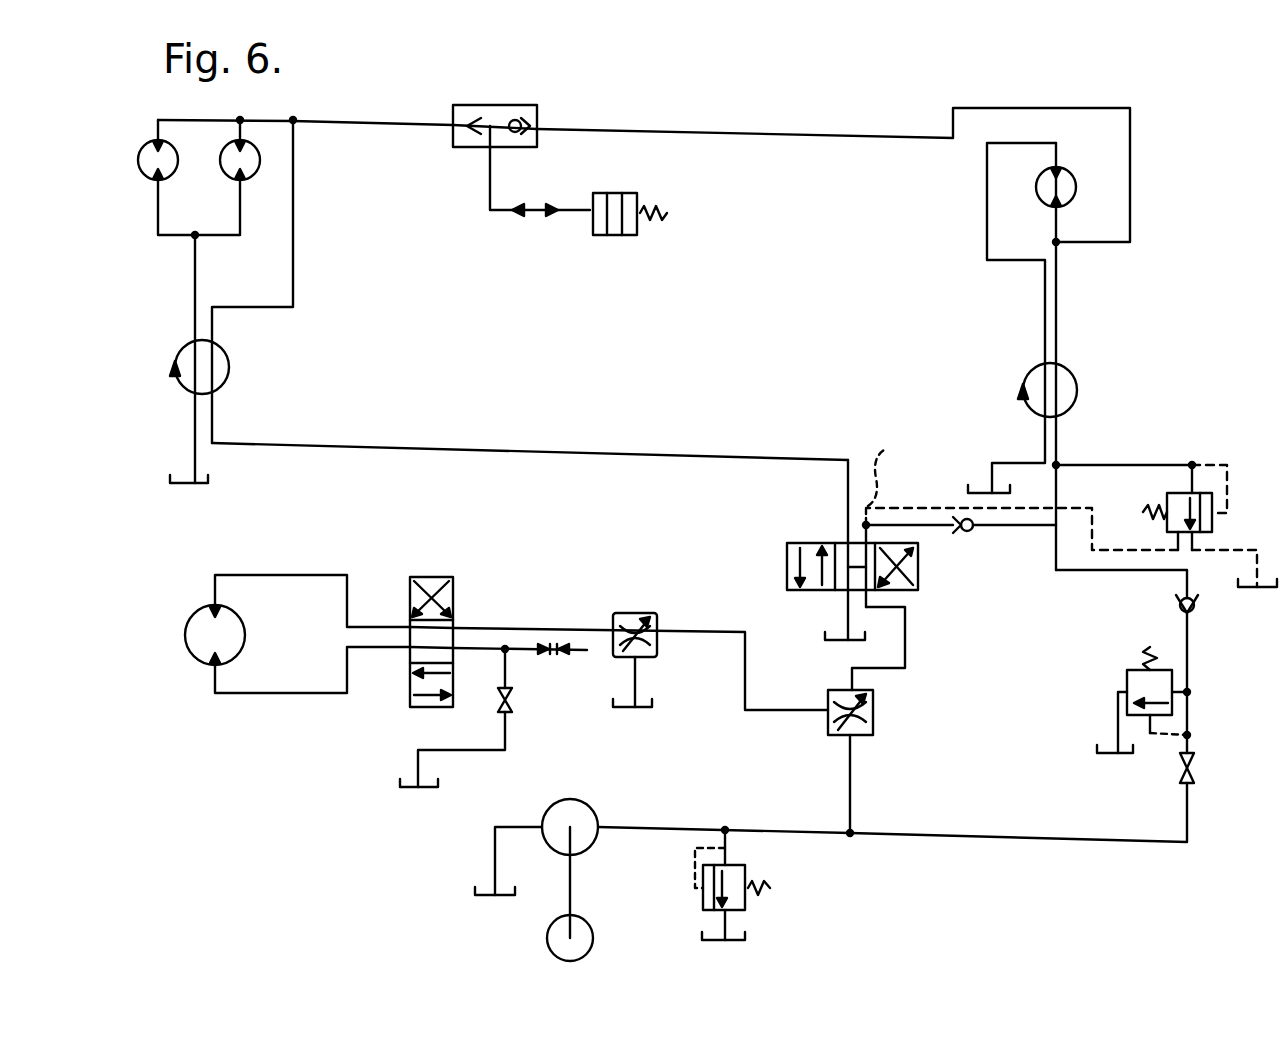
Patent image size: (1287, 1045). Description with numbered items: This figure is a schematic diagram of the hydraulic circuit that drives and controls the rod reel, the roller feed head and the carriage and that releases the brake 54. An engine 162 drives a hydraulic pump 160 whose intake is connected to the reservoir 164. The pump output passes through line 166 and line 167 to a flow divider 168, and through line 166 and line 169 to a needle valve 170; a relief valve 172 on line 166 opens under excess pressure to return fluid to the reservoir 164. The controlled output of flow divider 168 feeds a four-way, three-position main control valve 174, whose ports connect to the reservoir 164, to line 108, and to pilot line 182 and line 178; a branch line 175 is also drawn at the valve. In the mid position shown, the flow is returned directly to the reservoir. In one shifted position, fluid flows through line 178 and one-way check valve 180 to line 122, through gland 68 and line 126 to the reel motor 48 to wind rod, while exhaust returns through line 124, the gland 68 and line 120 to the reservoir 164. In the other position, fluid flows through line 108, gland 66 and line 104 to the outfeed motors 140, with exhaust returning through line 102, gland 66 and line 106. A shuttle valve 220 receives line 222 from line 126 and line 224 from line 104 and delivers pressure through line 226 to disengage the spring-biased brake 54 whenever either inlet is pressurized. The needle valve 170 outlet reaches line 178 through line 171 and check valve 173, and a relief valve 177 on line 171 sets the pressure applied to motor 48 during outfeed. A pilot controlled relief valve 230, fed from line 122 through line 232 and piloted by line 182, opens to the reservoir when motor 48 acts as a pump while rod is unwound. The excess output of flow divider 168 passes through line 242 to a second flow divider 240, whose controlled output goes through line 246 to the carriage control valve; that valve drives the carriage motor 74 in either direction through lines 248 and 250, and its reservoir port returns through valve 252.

The motor 48 is at (1071, 184).
The brake 54 is at (636, 195).
The gland 66 is at (229, 358).
The gland 68 is at (1072, 372).
The hydraulic carriage drive motor 74 is at (246, 638).
The line 102 is at (194, 273).
The line 104 is at (294, 254).
The line 106 is at (193, 428).
The line 108 is at (346, 446).
The line 120 is at (1044, 428).
The line 122 is at (1058, 428).
The line 124 is at (1016, 262).
The line 126 is at (1057, 290).
The motors 140 is at (236, 185).
The hydraulic pump 160 is at (592, 813).
The motor or engine 162 is at (581, 922).
The reservoir 164 is at (210, 484).
The line 166 is at (800, 830).
The line 167 is at (852, 802).
The flow divider 168 is at (874, 722).
The line 169 is at (1035, 838).
The needle valve 170 is at (1192, 772).
The line 171 is at (1130, 572).
The relief valve 172 is at (748, 872).
The one-way check valve 173 is at (1180, 608).
The main control valve 174 is at (788, 544).
The line 175 is at (906, 656).
The relief valve 177 is at (1128, 672).
The line 178 is at (930, 528).
The one-way check valve 180 is at (970, 533).
The pilot line 182 is at (894, 481).
The shuttle valve 220 is at (538, 106).
The line 222 is at (850, 136).
The line 224 is at (392, 123).
The line 226 is at (568, 213).
The pilot controlled relief valve 230 is at (1213, 532).
The line 232 is at (1128, 466).
The flow divider 240 is at (634, 612).
The line 242 is at (705, 633).
The line 246 is at (494, 632).
The line 248 is at (246, 695).
The line 250 is at (318, 554).
The valve 252 is at (514, 702).